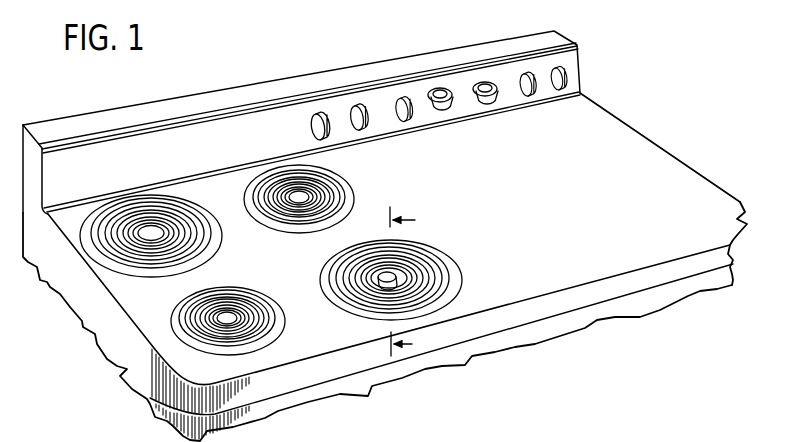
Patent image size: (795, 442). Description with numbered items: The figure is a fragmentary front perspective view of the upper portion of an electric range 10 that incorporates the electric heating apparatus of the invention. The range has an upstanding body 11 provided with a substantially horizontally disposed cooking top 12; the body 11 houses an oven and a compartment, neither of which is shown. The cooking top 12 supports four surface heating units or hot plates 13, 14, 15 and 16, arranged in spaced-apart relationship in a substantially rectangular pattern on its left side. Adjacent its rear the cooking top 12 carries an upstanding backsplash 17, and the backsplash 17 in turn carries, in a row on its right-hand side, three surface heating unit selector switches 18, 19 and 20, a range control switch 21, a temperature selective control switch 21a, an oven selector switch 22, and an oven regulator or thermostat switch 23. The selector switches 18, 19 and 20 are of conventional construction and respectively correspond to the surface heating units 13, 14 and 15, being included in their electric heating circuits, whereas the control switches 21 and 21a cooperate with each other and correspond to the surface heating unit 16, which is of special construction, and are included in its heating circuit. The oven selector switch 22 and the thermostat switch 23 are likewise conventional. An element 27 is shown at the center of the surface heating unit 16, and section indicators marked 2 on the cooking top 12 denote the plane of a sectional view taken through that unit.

The electric range 10 is at (50, 337).
The upstanding body 11 is at (128, 370).
The cooking top 12 is at (652, 164).
The surface heating unit 13 is at (275, 337).
The surface heating unit 14 is at (215, 251).
The surface heating unit 15 is at (353, 202).
The surface heating unit 16 is at (452, 276).
The backsplash 17 is at (230, 100).
The surface heating unit selector switch 18 is at (320, 114).
The surface heating unit selector switch 19 is at (358, 106).
The surface heating unit selector switch 20 is at (403, 98).
The range control switch 21 is at (445, 88).
The temperature selective control switch 21a is at (490, 82).
The oven selector switch 22 is at (528, 72).
The oven regulator or thermostat switch 23 is at (562, 67).
The temperature sensing element 27 is at (378, 279).
The section line of FIG. 2 is at (410, 282).